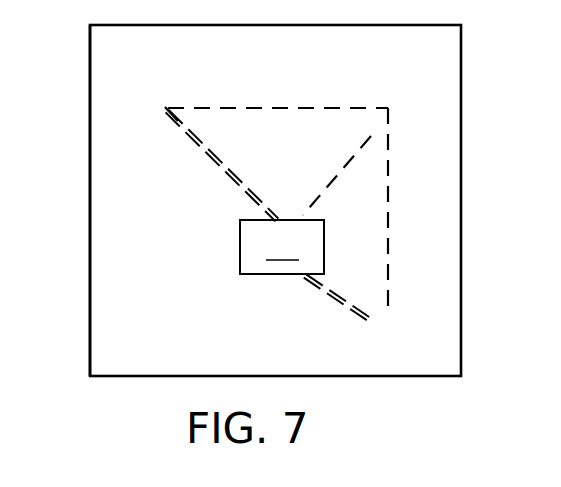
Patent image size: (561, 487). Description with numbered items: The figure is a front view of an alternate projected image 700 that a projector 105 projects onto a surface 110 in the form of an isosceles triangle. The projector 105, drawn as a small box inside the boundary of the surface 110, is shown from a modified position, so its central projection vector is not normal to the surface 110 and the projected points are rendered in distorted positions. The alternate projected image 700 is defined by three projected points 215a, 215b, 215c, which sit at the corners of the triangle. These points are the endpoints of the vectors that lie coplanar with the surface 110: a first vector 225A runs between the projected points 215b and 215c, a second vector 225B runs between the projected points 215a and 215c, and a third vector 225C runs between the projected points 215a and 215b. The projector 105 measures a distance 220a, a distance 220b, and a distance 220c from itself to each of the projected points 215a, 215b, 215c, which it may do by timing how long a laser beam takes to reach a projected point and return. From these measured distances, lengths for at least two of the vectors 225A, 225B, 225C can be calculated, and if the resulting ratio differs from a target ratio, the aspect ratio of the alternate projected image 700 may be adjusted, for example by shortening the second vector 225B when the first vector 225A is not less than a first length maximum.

The alternate projected image 700 is at (83, 48).
The surface 110 is at (90, 212).
The projector 105 is at (282, 247).
The first vector 225A is at (382, 204).
The second vector 225B is at (221, 165).
The vector 225C is at (208, 108).
The projected point 215a is at (165, 107).
The projected point 215b is at (388, 108).
The projected point 215c is at (375, 321).
The distance 220a is at (221, 165).
The distance 220b is at (352, 150).
The distance 220c is at (340, 288).